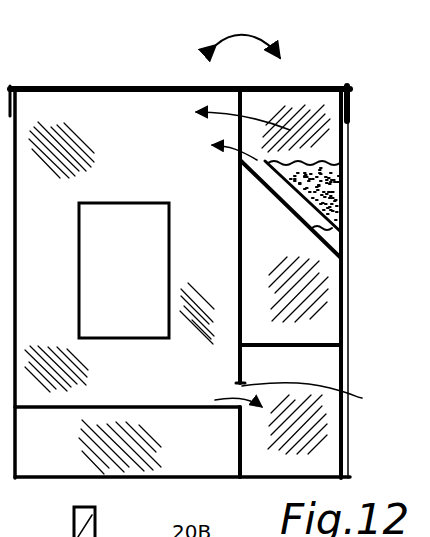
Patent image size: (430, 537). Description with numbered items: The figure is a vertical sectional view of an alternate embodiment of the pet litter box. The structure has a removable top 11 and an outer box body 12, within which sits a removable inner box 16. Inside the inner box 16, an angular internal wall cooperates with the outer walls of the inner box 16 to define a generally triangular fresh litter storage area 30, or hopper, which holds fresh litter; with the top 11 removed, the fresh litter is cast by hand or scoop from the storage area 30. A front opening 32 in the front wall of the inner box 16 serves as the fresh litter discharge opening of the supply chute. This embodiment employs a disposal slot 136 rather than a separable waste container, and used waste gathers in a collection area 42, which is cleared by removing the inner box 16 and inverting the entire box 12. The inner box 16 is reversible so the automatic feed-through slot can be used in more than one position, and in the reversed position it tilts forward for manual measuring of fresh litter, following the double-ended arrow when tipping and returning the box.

The removable top 11 is at (331, 86).
The outer box body 12 is at (348, 314).
The inner box 16 is at (149, 270).
The fresh litter storage area 30 is at (333, 190).
The front opening 32 is at (333, 246).
The collection area 42 is at (325, 435).
The disposal slot 136 is at (324, 397).